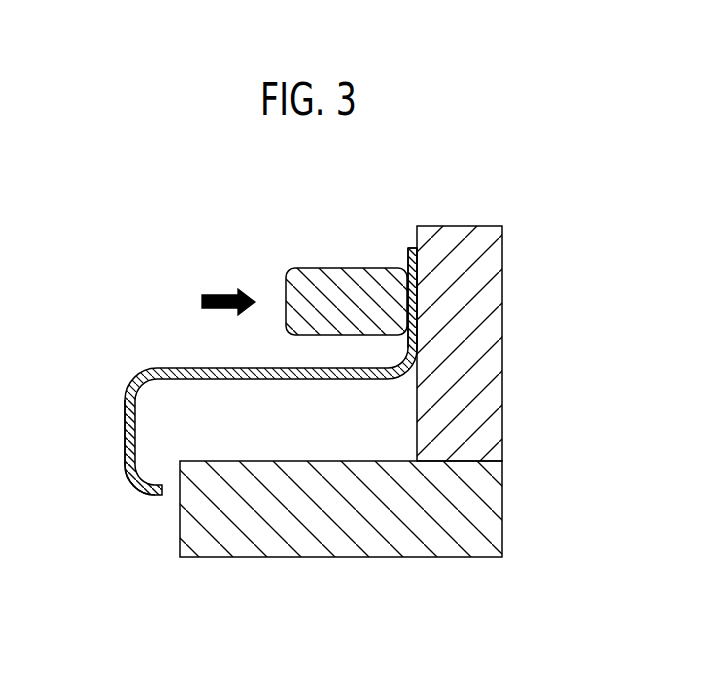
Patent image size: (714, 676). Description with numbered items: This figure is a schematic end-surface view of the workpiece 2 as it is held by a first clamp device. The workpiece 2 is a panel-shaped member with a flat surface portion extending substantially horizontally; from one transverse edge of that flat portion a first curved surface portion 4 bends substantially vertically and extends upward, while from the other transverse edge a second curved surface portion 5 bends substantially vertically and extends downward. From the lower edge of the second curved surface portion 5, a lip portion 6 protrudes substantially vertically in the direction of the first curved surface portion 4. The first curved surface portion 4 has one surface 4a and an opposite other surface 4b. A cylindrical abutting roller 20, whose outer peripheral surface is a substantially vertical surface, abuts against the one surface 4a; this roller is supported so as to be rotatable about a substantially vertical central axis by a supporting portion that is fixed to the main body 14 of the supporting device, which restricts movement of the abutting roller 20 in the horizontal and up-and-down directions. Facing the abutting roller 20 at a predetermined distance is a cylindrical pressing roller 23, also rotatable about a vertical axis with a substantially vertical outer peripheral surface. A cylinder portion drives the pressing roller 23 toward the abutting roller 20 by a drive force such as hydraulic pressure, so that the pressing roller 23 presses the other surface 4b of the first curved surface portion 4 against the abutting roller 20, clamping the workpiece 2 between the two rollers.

The workpiece 2 is at (167, 352).
The first curved surface portion 4 is at (410, 248).
The one surface of the first curved surface portion 4a is at (420, 259).
The other surface of the first curved surface portion 4b is at (408, 268).
The second curved surface portion 5 is at (125, 447).
The lip portion 6 is at (142, 496).
The main body 14 is at (375, 558).
The abutting roller 20 is at (502, 322).
The pressing roller 23 is at (300, 268).